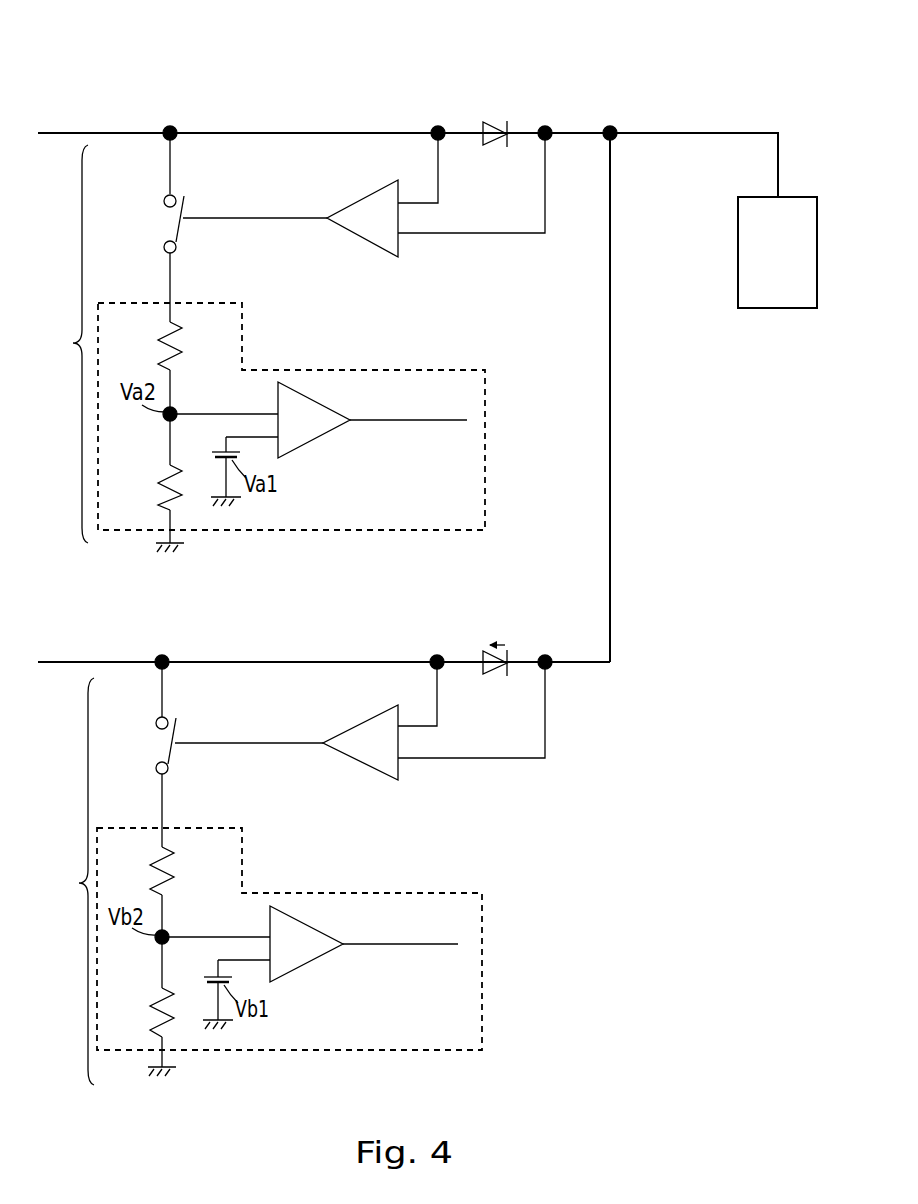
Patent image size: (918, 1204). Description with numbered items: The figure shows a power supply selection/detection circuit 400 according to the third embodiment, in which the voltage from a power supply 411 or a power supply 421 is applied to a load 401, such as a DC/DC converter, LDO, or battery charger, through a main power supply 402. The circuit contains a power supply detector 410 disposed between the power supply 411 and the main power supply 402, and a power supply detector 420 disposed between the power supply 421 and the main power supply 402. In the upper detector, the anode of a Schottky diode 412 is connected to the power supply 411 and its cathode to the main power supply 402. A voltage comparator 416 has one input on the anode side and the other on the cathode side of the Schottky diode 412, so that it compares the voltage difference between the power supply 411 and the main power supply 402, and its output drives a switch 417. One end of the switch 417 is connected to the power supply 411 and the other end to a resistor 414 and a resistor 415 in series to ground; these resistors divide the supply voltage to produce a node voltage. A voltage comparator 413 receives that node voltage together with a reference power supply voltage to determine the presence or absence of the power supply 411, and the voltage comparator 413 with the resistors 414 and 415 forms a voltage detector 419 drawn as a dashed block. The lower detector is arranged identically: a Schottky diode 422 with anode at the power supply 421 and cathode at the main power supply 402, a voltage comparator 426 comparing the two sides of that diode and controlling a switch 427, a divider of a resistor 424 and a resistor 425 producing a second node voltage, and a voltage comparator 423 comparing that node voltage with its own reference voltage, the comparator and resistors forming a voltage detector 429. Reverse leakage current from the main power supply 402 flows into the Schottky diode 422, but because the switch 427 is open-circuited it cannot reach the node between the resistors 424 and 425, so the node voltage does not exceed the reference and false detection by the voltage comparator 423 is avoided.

The power supply selection/detection circuit 400 is at (737, 114).
The load 401 is at (775, 308).
The main power supply 402 is at (634, 131).
The power supply detector 410 is at (65, 344).
The power supply 411 is at (68, 131).
The Schottky diode 412 is at (482, 128).
The voltage comparator 413 is at (306, 448).
The resistor 414 is at (160, 346).
The resistor 415 is at (158, 490).
The voltage comparator 416 is at (385, 258).
The switch 417 is at (185, 200).
The voltage detector 419 is at (486, 472).
The power supply detector 420 is at (69, 881).
The power supply 421 is at (68, 660).
The Schottky diode 422 is at (482, 658).
The voltage comparator 423 is at (298, 972).
The resistor 424 is at (152, 870).
The resistor 425 is at (152, 1014).
The voltage comparator 426 is at (370, 772).
The switch 427 is at (178, 722).
The voltage detector 429 is at (483, 998).